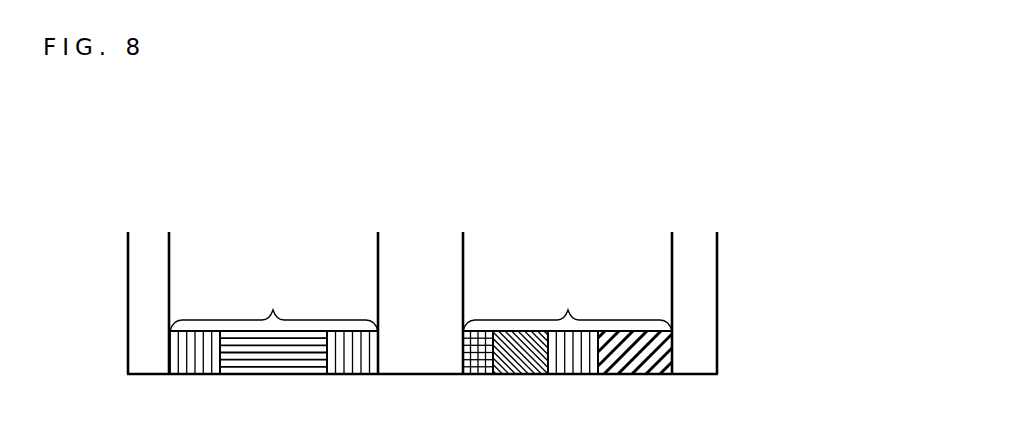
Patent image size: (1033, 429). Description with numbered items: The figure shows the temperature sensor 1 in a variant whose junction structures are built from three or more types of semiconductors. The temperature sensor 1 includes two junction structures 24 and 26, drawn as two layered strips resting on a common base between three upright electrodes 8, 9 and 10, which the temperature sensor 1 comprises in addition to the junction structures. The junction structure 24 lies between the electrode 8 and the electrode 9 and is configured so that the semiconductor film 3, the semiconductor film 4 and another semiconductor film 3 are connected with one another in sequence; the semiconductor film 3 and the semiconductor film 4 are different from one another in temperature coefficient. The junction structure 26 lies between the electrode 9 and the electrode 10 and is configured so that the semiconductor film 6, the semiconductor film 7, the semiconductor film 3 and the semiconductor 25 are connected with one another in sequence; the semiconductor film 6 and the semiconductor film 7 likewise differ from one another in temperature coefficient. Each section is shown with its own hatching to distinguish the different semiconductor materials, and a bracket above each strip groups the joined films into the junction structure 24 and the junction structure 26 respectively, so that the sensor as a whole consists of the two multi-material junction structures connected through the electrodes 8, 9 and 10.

The temperature sensor 1 is at (644, 177).
The semiconductor film 3 is at (200, 364).
The semiconductor film 4 is at (272, 364).
The semiconductor film 6 is at (477, 364).
The semiconductor film 7 is at (522, 365).
The electrode 8 is at (150, 231).
The electrode 9 is at (420, 231).
The electrode 10 is at (695, 231).
The junction structure 24 is at (274, 307).
The semiconductor 25 is at (638, 364).
The junction structure 26 is at (567, 307).